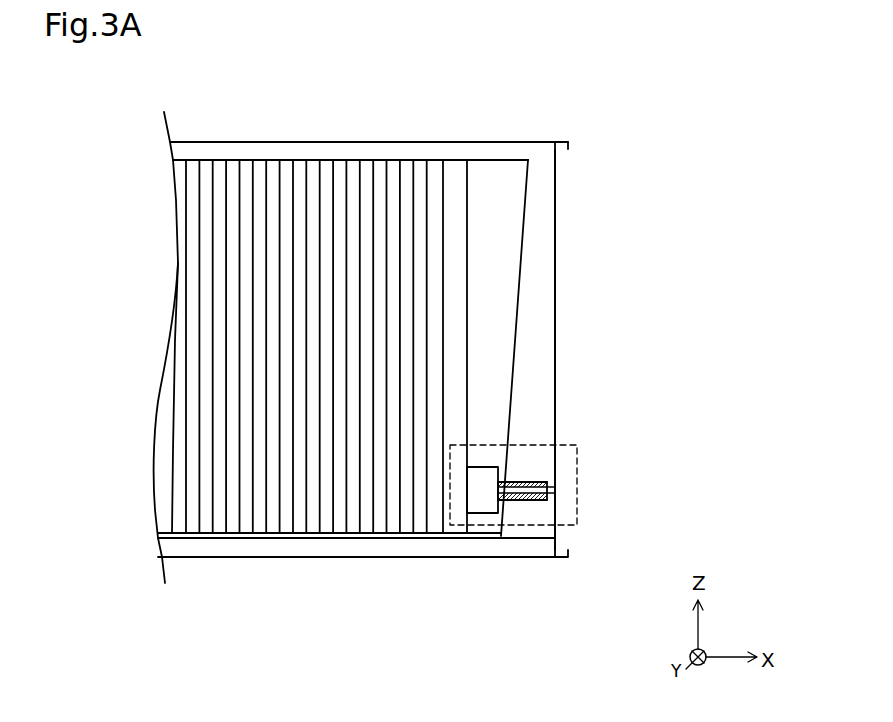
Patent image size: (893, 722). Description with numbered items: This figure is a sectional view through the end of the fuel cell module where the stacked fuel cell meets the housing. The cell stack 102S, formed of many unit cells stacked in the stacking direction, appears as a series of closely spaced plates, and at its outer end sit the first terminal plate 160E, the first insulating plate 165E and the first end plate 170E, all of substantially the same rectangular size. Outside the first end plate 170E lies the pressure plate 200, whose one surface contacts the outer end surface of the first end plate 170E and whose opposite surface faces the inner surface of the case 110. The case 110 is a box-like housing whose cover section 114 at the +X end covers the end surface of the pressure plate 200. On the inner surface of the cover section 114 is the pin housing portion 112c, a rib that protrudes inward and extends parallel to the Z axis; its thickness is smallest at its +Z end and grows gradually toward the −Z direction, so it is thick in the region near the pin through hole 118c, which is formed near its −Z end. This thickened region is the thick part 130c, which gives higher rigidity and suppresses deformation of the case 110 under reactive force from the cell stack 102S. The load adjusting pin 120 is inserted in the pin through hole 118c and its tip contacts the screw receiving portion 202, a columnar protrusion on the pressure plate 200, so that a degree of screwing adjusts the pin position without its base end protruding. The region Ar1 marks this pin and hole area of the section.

The case 110 is at (573, 124).
The cover section 114 is at (557, 243).
The pin housing portion 112c is at (538, 325).
The cell stack 102S is at (294, 553).
The first terminal plate 160E is at (417, 162).
The first insulating plate 165E is at (415, 163).
The first end plate 170E is at (435, 163).
The pressure plate 200 is at (457, 162).
The screw receiving portion 202 is at (482, 467).
The load adjusting pin 120 is at (535, 488).
The thick part 130c is at (540, 470).
The pin through hole 118c is at (537, 500).
The region Ar1 is at (524, 527).